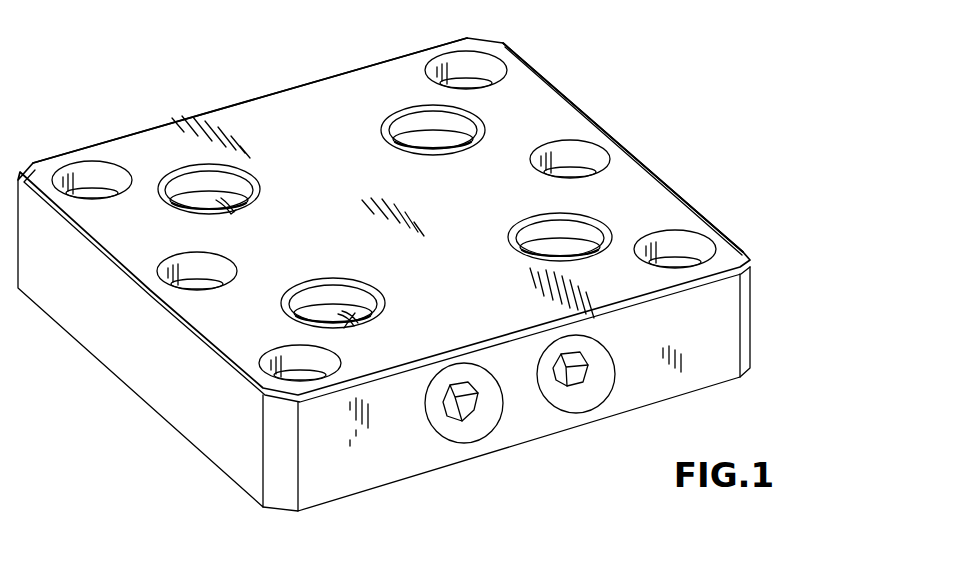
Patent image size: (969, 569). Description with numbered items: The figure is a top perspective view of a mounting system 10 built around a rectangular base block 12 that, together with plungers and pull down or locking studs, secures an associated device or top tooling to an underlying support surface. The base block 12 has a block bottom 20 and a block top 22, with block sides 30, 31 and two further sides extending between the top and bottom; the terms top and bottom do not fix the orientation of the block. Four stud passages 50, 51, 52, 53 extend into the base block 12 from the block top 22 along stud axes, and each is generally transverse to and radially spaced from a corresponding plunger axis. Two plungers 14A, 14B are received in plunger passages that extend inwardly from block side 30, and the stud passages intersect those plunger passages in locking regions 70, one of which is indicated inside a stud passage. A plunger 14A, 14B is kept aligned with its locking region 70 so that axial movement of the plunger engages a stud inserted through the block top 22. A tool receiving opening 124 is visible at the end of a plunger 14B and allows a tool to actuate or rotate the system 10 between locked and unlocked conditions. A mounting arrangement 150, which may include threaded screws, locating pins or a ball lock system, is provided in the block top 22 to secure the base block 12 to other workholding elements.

The system 10 is at (593, 55).
The base block 12 is at (633, 192).
The plunger 14A is at (455, 426).
The plunger 14B is at (578, 408).
The block bottom 20 is at (365, 492).
The block top 22 is at (302, 105).
The block side 30 is at (702, 328).
The block side 31 is at (143, 365).
The stud passage 50 is at (524, 221).
The stud passage 51 is at (359, 284).
The stud passage 52 is at (263, 195).
The stud passage 53 is at (385, 130).
The locking region 70 is at (347, 317).
The tool receiving opening 124 is at (580, 382).
The mounting arrangement 150 is at (95, 172).